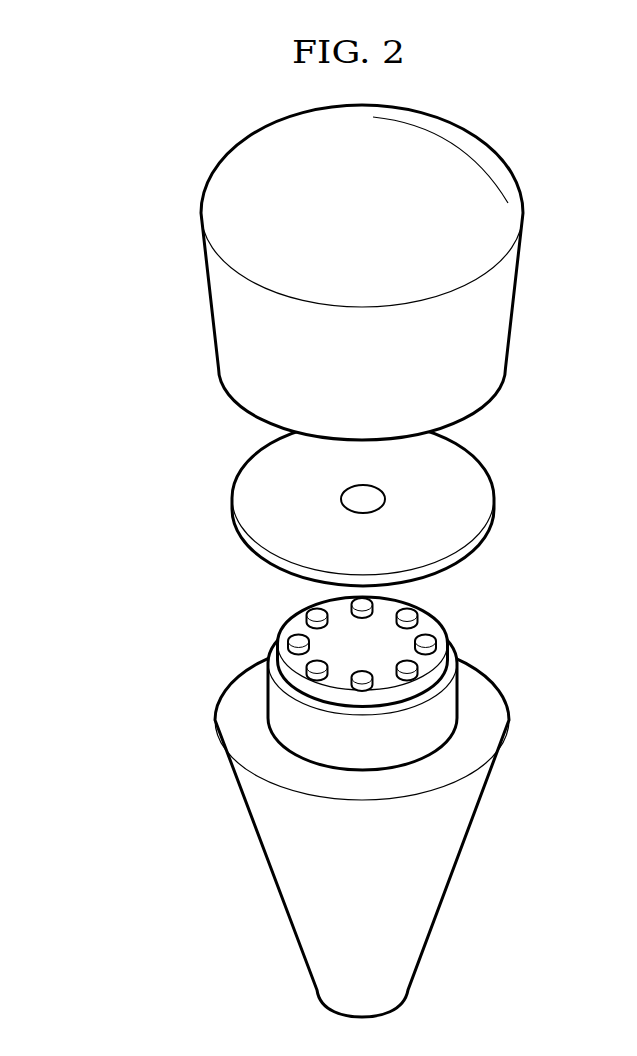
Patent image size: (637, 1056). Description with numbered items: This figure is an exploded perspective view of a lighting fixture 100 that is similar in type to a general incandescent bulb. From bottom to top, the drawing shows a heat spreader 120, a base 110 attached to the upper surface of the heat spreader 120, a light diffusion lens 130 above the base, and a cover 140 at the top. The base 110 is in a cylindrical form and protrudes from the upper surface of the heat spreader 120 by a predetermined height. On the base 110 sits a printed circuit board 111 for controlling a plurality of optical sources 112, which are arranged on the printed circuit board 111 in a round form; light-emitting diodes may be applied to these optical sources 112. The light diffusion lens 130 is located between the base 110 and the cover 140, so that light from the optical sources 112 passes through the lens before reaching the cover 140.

The lighting fixture 100 is at (119, 221).
The base 110 is at (340, 674).
The printed circuit board 111 is at (424, 632).
The optical sources 112 is at (297, 611).
The heat spreader 120 is at (467, 815).
The light diffusion lens 130 is at (483, 485).
The cover 140 is at (505, 320).